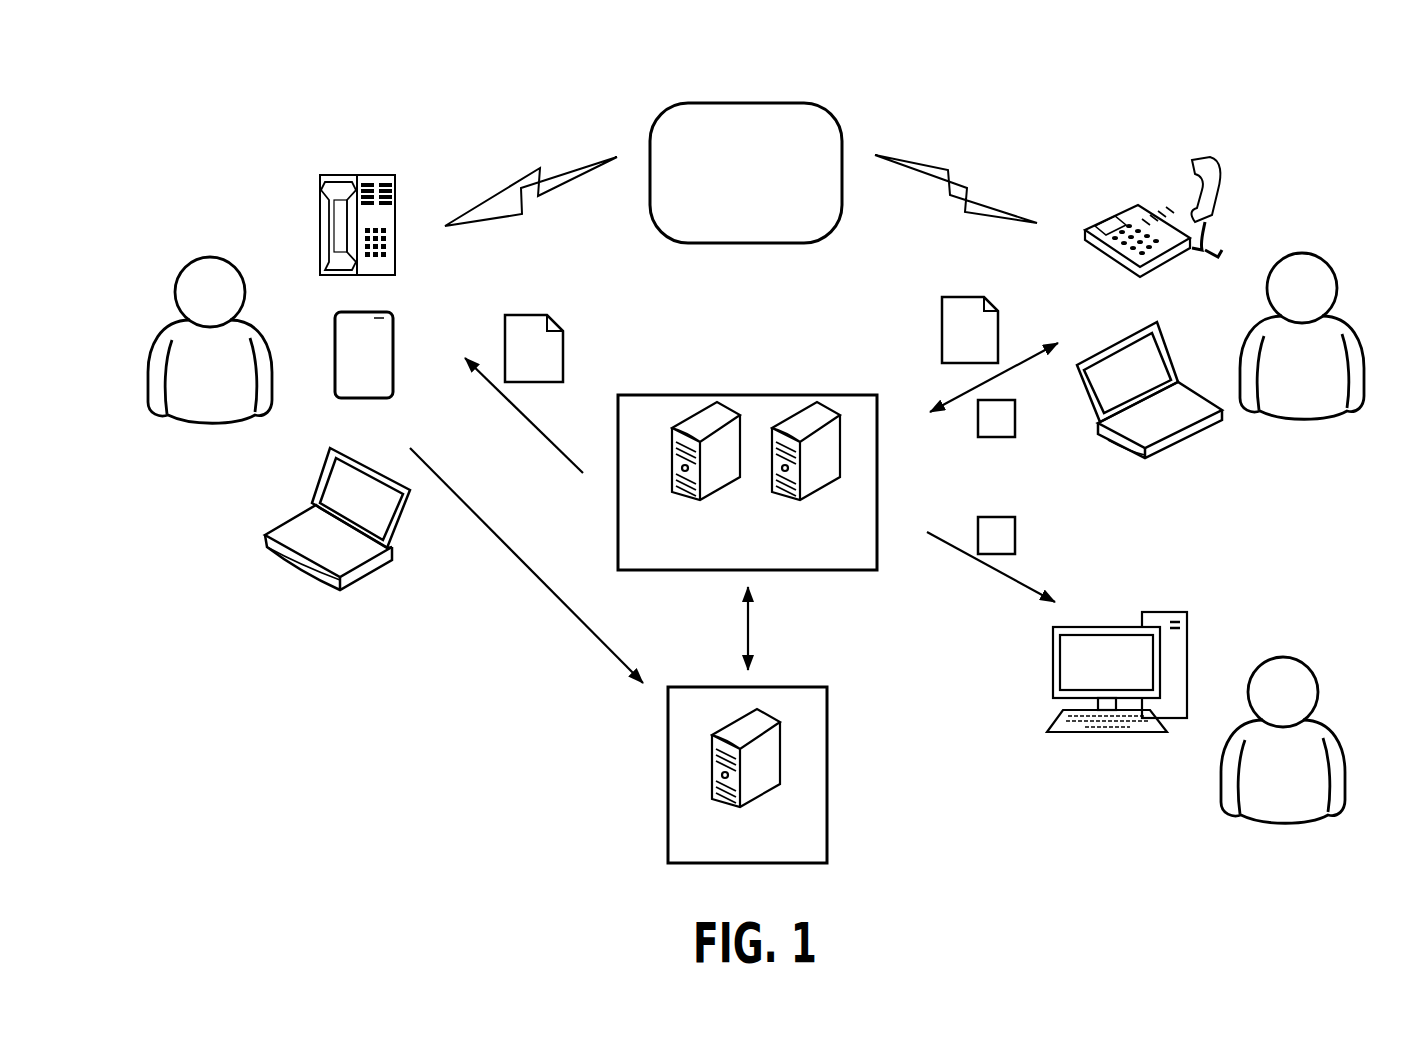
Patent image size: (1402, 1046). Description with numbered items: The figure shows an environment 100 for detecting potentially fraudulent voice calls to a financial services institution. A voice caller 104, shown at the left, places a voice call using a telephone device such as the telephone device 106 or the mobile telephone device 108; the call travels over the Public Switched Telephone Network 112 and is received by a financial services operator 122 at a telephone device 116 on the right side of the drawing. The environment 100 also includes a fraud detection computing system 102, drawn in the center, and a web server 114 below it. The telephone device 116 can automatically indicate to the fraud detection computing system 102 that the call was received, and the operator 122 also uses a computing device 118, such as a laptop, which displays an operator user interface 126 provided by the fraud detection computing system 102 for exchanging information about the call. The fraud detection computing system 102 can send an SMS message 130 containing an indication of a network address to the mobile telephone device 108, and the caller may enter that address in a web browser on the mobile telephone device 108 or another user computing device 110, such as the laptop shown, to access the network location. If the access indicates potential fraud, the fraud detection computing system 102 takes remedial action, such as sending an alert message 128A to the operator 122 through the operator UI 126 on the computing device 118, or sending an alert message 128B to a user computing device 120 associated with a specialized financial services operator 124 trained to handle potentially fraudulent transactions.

The environment 100 is at (1330, 93).
The fraud detection computing system 102 is at (760, 395).
The voice caller 104 is at (170, 326).
The telephone device 106 is at (355, 176).
The mobile telephone device 108 is at (394, 345).
The user computing device 110 is at (288, 530).
The Public Switched Telephone Network 112 is at (735, 104).
The web server 114 is at (765, 687).
The telephone device 116 is at (1095, 230).
The computing device 118 is at (1126, 345).
The user computing device 120 is at (1162, 613).
The financial services operator 122 is at (1305, 256).
The specialized financial services operator 124 is at (1290, 658).
The operator user interface 126 is at (940, 332).
The alert message 128A is at (978, 428).
The alert message 128B is at (1015, 534).
The SMS message 130 is at (563, 340).